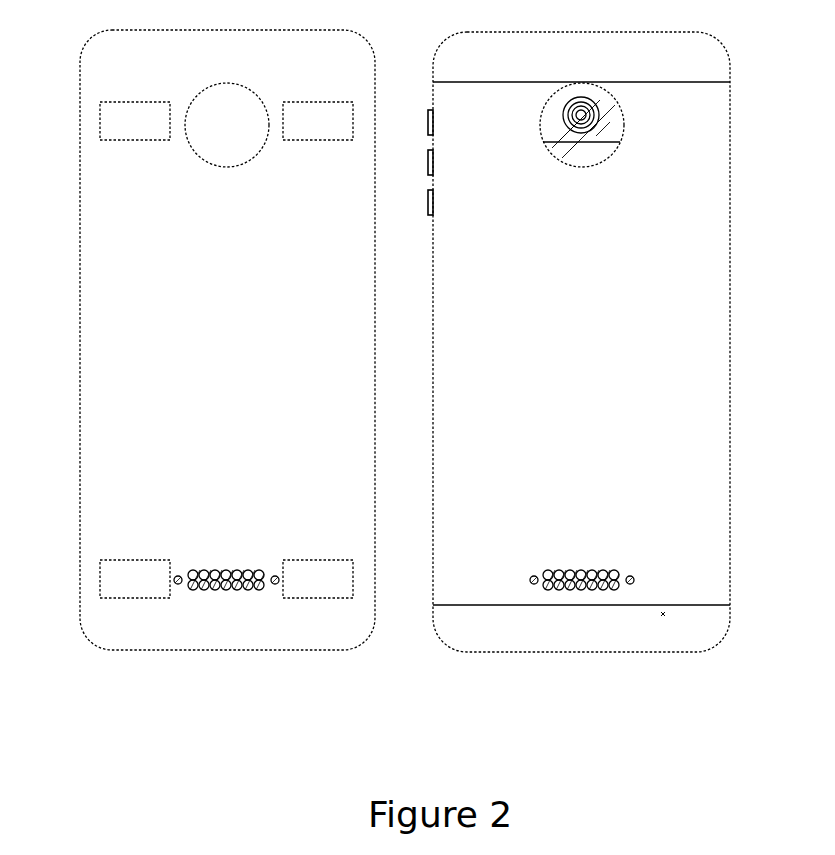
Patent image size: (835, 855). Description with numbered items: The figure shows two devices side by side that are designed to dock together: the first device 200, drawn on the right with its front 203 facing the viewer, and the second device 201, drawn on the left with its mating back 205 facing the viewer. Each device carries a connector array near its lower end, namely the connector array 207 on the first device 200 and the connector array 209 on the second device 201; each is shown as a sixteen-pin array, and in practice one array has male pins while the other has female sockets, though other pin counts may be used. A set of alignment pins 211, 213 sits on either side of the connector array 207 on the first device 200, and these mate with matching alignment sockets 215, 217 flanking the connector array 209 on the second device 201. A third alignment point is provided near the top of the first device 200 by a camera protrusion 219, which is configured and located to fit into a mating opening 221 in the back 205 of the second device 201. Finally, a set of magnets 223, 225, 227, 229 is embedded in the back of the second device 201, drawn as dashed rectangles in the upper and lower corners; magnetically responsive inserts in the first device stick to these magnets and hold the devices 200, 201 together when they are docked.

The first device 200 is at (637, 671).
The second device 201 is at (213, 666).
The front 203 is at (710, 392).
The mating back 205 is at (100, 390).
The connector array 207 is at (586, 571).
The connector array 209 is at (241, 570).
The alignment pin 211 is at (534, 576).
The alignment pin 213 is at (632, 576).
The alignment socket 215 is at (178, 576).
The alignment socket 217 is at (275, 576).
The camera protrusion 219 is at (610, 160).
The mating opening 221 is at (241, 163).
The magnet 223 is at (130, 574).
The magnet 225 is at (317, 574).
The magnet 227 is at (130, 118).
The magnet 229 is at (316, 119).